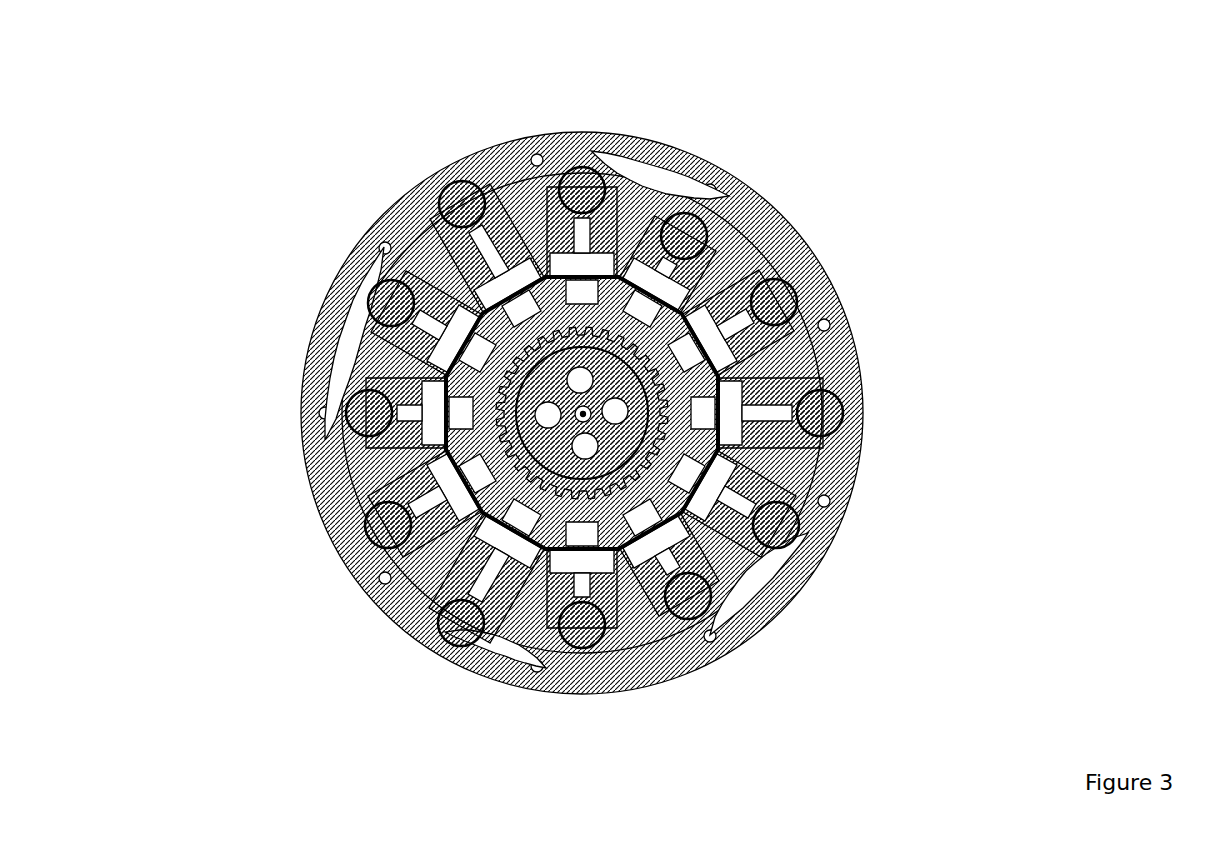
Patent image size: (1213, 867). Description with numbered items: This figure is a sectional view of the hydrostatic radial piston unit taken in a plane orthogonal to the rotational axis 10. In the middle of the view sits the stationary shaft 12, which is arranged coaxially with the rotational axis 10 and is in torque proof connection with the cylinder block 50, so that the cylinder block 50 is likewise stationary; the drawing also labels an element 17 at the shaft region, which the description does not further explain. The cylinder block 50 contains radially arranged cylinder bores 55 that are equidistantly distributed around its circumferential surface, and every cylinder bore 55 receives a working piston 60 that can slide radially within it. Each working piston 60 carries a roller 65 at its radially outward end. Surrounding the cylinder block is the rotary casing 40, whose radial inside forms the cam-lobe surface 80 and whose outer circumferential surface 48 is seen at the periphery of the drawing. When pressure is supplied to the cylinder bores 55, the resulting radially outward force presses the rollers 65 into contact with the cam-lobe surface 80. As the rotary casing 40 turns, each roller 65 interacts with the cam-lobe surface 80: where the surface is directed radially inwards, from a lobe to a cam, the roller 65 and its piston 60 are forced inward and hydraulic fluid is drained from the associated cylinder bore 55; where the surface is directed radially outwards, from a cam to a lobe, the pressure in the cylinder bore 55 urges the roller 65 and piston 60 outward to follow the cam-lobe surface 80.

The rotational axis 10 is at (483, 357).
The stationary shaft 12 is at (605, 367).
The hub 17 is at (630, 387).
The rotary casing 40 is at (352, 382).
The outer circumferential surface 48 is at (302, 413).
The cylinder block 50 is at (413, 245).
The cylinder bore 55 is at (445, 210).
The working piston 60 is at (500, 210).
The roller 65 is at (782, 303).
The cam-lobe surface 80 is at (580, 178).